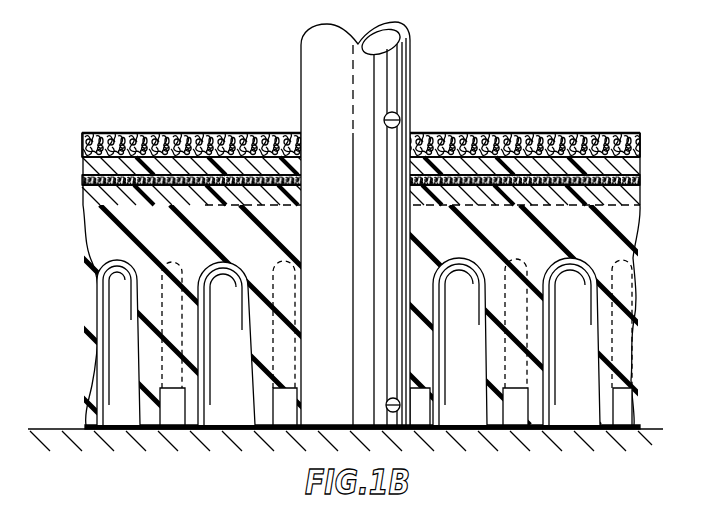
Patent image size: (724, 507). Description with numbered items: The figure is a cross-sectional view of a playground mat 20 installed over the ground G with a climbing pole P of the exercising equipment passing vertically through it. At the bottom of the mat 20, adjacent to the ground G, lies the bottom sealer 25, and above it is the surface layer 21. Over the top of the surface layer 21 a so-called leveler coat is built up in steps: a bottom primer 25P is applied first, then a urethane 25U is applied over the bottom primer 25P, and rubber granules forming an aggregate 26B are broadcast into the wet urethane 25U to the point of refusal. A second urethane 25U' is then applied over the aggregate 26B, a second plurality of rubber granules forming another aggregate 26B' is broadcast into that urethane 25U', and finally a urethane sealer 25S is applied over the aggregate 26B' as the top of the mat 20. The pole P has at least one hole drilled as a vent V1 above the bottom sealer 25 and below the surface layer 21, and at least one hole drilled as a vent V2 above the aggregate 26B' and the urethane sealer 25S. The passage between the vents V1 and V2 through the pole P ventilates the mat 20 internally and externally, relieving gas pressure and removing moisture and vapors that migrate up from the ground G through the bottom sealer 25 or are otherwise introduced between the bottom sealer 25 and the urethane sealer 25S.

The urethane sealer 25S is at (127, 132).
The aggregate 26B is at (168, 152).
The aggregate 26B' is at (525, 106).
The bottom primer 25P is at (82, 185).
The second urethane 25U' is at (398, 166).
The urethane 25U is at (391, 203).
The surface layer 21 is at (148, 225).
The mat 20 is at (90, 263).
The bottom sealer 25 is at (86, 426).
The ground G is at (92, 443).
The climbing pole P is at (318, 102).
The vent V1 is at (386, 405).
The vent V2 is at (400, 117).